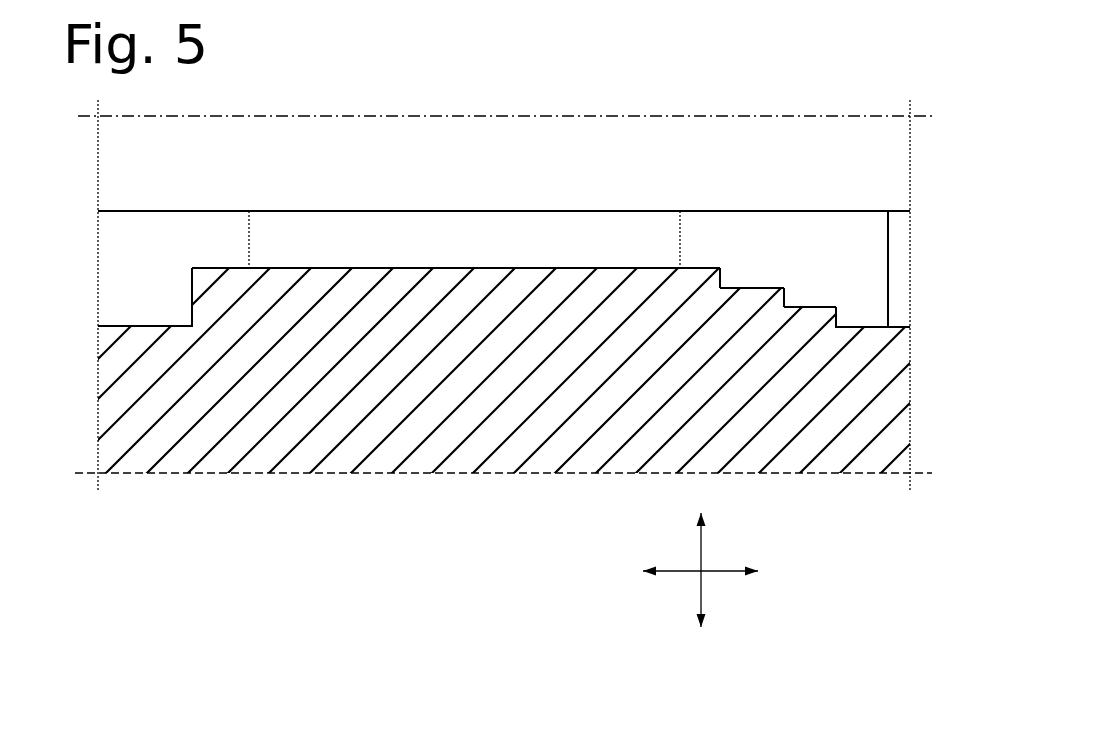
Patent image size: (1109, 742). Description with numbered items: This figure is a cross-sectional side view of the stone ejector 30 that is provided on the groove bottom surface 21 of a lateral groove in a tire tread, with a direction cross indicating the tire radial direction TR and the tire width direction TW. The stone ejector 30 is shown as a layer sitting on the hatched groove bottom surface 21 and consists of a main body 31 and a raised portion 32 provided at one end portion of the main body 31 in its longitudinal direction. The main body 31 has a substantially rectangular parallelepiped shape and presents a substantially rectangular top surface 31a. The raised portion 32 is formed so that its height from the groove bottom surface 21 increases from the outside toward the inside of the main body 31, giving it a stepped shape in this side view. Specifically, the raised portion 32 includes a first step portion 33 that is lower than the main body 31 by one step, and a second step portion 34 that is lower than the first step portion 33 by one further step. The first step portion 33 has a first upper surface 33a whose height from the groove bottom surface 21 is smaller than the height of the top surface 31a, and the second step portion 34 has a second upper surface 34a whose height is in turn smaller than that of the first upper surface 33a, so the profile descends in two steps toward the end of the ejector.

The groove bottom surface 21 is at (880, 324).
The stone ejector 30 is at (553, 240).
The main body 31 is at (304, 258).
The top surface 31a is at (397, 268).
The raised portion 32 is at (829, 173).
The first step portion 33 is at (765, 283).
The second step portion 34 is at (810, 302).
The first upper surface 33a is at (742, 287).
The second upper surface 34a is at (823, 307).
The tire radial direction TR is at (701, 548).
The tire width direction TW is at (717, 574).